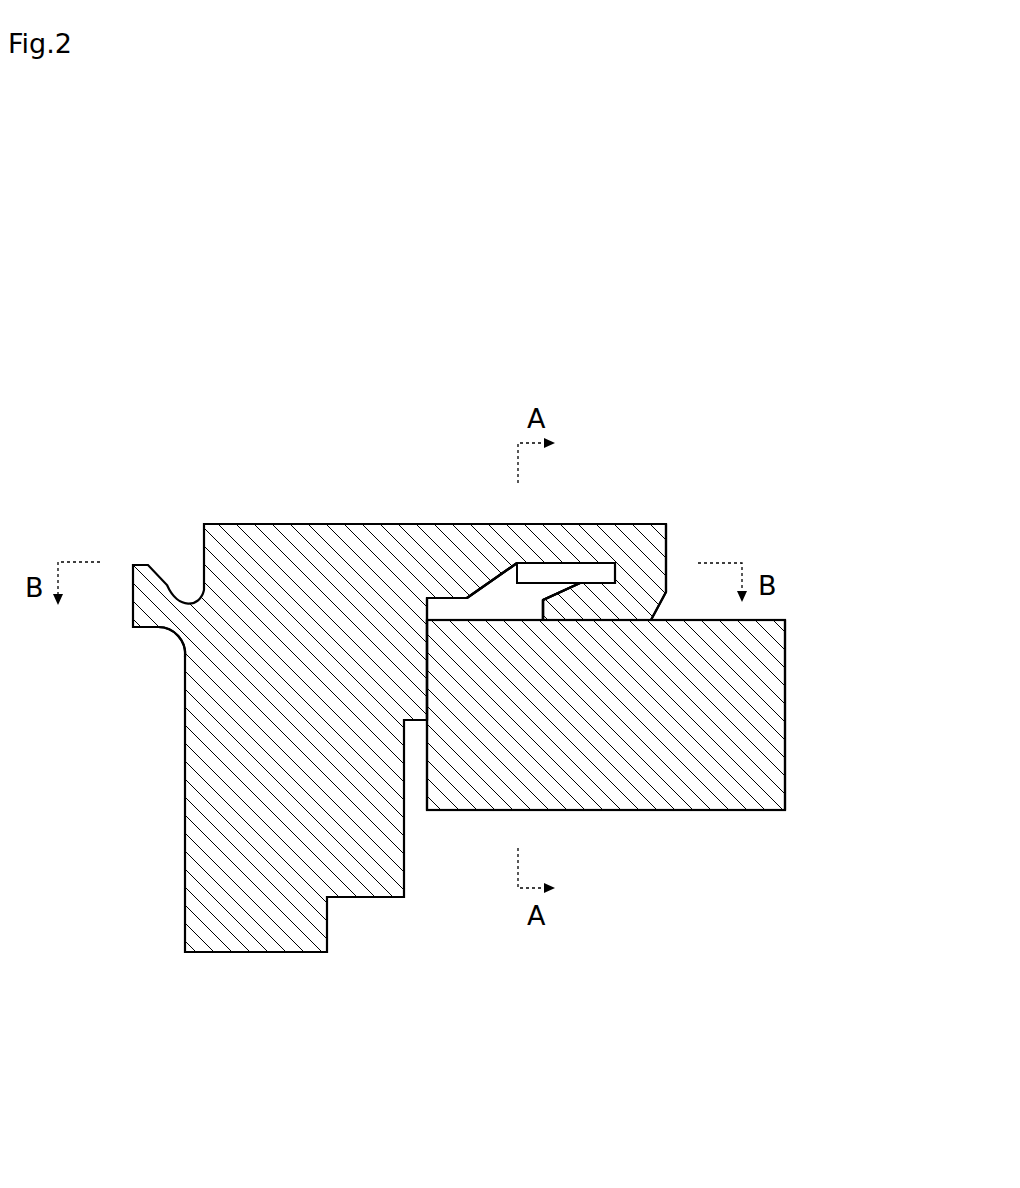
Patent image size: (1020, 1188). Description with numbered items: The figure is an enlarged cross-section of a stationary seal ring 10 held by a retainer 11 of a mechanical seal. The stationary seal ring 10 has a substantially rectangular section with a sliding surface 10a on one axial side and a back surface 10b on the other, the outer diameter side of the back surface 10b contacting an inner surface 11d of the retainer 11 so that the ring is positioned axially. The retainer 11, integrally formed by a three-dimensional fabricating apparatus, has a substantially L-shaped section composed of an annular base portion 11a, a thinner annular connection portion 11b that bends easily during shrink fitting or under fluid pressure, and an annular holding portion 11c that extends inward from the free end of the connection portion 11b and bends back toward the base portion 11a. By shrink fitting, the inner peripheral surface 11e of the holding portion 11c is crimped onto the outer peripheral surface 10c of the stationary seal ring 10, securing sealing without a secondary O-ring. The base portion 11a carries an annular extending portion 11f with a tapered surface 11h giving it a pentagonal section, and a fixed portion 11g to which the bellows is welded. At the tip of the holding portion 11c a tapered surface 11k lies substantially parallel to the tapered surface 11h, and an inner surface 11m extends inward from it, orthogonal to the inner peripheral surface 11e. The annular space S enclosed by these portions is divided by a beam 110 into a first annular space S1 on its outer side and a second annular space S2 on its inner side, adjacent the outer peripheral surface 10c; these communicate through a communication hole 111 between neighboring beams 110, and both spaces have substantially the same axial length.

The stationary seal ring 10 is at (711, 812).
The sliding surface 10a is at (785, 763).
The back surface 10b is at (427, 688).
The outer peripheral surface 10c is at (767, 620).
The retainer 11 is at (248, 524).
The base portion 11a is at (327, 557).
The annular connection portion 11b is at (518, 563).
The annular holding portion 11c is at (667, 592).
The inner surface 11d is at (427, 698).
The inner peripheral surface 11e is at (578, 600).
The annular extending portion 11f is at (453, 563).
The fixed portion 11g is at (163, 630).
The tapered surface 11h is at (500, 576).
The tapered surface 11k is at (606, 597).
The inner surface 11m is at (566, 582).
The beam 110 is at (612, 574).
The communication hole 111 is at (566, 573).
The annular space S is at (521, 591).
The first annular space S1 is at (603, 574).
The second annular space S2 is at (437, 607).